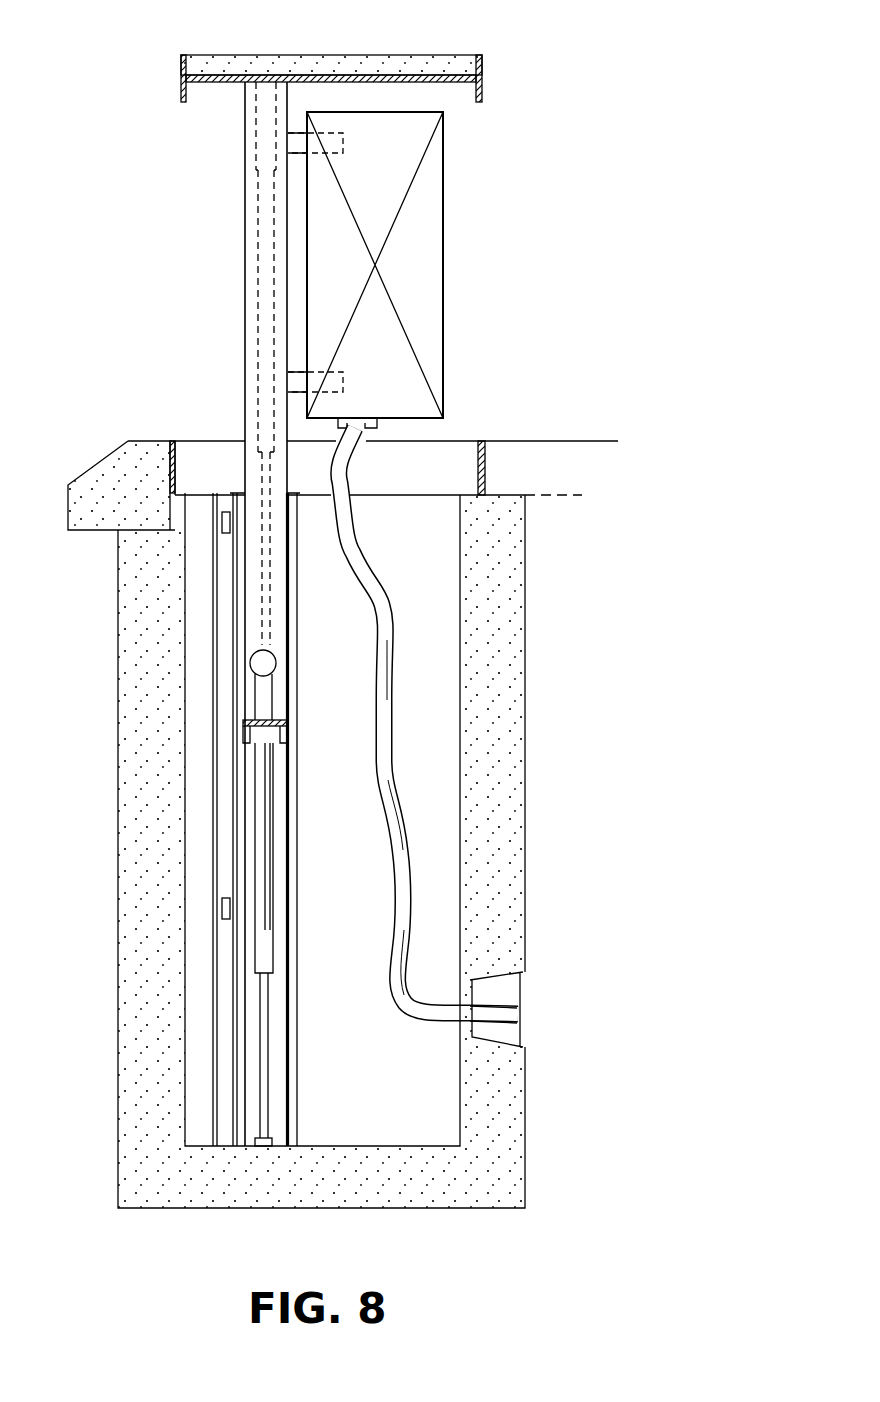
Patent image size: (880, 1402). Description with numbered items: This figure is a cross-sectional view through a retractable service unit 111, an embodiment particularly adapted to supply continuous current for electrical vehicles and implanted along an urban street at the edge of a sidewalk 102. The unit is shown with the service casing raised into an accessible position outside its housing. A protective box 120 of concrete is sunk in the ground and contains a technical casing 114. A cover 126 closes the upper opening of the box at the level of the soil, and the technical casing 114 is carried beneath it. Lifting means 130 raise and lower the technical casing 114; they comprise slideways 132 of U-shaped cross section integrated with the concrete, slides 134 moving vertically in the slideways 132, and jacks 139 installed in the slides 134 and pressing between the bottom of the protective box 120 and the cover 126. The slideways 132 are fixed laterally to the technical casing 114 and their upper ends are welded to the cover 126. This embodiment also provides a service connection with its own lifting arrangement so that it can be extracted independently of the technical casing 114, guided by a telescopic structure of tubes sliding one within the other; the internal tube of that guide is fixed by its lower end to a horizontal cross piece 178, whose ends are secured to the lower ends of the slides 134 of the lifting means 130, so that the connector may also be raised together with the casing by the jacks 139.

The sidewalk 102 is at (560, 470).
The service unit 111 is at (207, 452).
The technical casing 114 is at (452, 351).
The protective box 120 is at (147, 612).
The cover 126 is at (402, 68).
The lifting means 130 is at (232, 248).
The slideways 132 is at (284, 1044).
The slides 134 is at (245, 297).
The jacks 139 is at (264, 367).
The horizontal cross piece 178 is at (282, 735).